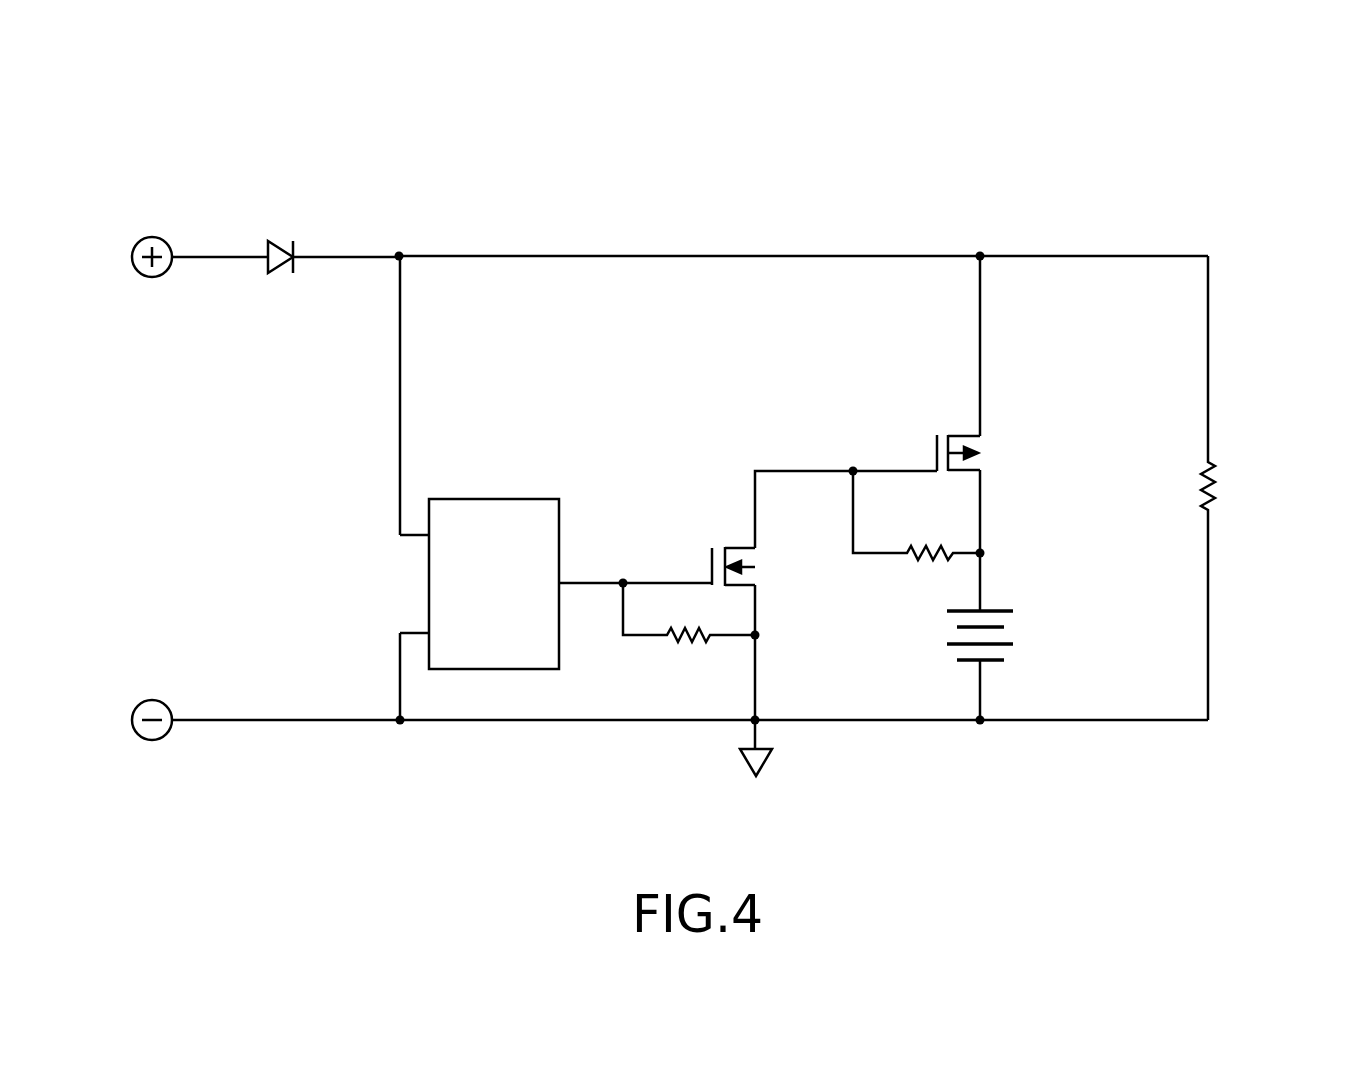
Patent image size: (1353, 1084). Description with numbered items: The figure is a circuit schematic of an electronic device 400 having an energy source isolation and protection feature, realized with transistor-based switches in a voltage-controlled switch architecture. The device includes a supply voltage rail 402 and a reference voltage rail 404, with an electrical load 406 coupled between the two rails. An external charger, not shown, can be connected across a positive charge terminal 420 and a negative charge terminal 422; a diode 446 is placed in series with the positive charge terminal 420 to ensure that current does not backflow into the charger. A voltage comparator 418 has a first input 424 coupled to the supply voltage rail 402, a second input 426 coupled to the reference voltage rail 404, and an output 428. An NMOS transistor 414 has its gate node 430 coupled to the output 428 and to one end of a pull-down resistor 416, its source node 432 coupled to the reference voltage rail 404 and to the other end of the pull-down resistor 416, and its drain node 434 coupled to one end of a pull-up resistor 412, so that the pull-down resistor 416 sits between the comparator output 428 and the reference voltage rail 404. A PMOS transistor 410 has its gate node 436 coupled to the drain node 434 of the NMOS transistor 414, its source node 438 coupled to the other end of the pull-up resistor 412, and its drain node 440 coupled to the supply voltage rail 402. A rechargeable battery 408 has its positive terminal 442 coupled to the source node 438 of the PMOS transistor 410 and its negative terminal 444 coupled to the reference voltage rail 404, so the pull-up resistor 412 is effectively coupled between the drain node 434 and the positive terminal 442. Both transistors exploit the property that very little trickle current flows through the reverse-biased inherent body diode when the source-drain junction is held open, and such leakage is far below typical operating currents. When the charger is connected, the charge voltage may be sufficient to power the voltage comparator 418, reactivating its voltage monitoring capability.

The electronic device 400 is at (560, 172).
The supply voltage rail 402 is at (783, 256).
The reference voltage rail 404 is at (892, 722).
The electrical load 406 is at (1208, 358).
The rechargeable battery 408 is at (1040, 623).
The PMOS transistor 410 is at (1016, 462).
The pull-up resistor 412 is at (901, 560).
The NMOS transistor 414 is at (793, 580).
The pull-down resistor 416 is at (660, 642).
The voltage comparator 418 is at (494, 499).
The positive charge terminal 420 is at (150, 237).
The negative charge terminal 422 is at (152, 740).
The first input 424 is at (398, 551).
The second input 426 is at (398, 615).
The output 428 is at (588, 582).
The gate node 430 is at (667, 582).
The source node 432 is at (757, 620).
The drain node 434 is at (755, 510).
The gate node 436 is at (907, 470).
The source node 438 is at (980, 513).
The drain node 440 is at (980, 398).
The positive terminal 442 is at (980, 586).
The negative terminal 444 is at (980, 690).
The diode 446 is at (278, 250).